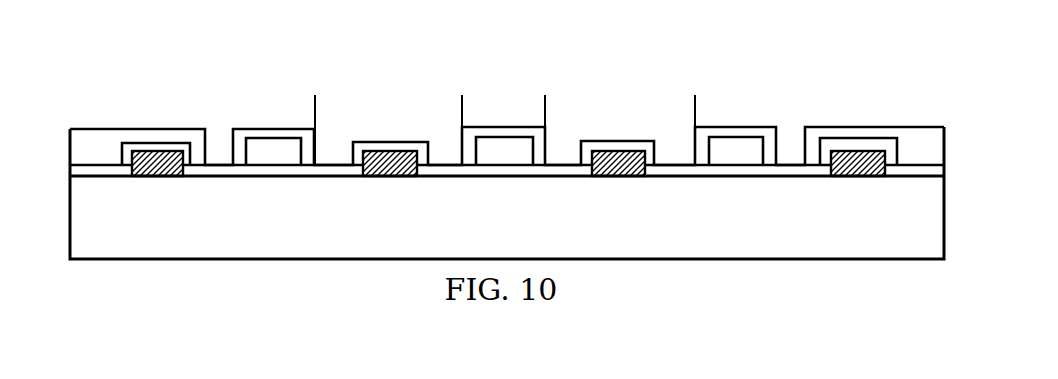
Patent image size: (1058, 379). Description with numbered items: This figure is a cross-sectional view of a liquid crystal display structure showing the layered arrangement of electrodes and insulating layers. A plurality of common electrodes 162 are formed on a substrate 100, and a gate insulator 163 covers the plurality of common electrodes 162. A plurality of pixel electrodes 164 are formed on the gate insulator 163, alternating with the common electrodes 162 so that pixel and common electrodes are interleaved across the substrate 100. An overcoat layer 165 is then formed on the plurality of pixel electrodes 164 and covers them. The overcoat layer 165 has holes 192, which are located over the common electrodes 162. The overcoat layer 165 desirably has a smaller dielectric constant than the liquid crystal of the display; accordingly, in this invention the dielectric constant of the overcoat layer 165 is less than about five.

The substrate 100 is at (522, 236).
The common electrode 162 is at (162, 151).
The gate insulator 163 is at (497, 172).
The pixel electrode 164 is at (269, 139).
The overcoat layer 165 is at (833, 127).
The hole 192 is at (315, 112).